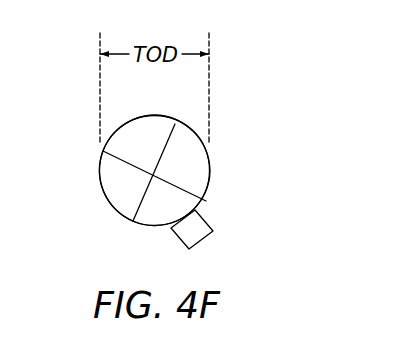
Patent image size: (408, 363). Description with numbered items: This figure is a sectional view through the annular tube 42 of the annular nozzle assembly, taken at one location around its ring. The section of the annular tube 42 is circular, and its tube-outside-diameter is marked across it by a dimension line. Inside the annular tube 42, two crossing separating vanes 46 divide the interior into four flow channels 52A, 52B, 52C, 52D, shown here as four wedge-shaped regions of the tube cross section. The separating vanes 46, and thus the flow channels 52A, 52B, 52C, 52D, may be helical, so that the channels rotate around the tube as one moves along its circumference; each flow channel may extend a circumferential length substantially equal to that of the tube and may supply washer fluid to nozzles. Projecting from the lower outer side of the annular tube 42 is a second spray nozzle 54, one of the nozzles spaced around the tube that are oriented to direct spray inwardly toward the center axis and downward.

The annular tube 42 is at (100, 178).
The separating vanes 46 is at (120, 152).
The flow channel 52A is at (120, 187).
The flow channel 52B is at (142, 140).
The flow channel 52C is at (187, 167).
The flow channel 52D is at (168, 192).
The second spray nozzle 54 is at (204, 242).